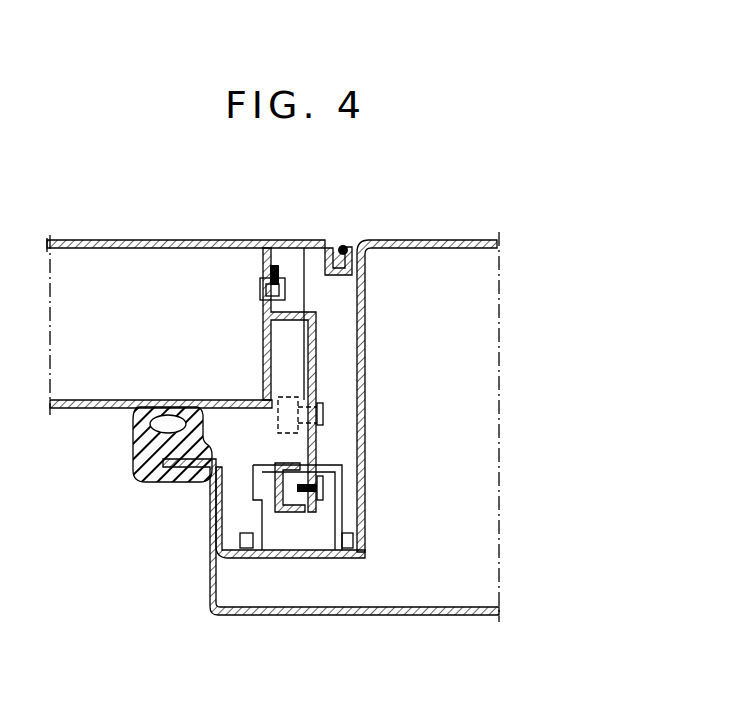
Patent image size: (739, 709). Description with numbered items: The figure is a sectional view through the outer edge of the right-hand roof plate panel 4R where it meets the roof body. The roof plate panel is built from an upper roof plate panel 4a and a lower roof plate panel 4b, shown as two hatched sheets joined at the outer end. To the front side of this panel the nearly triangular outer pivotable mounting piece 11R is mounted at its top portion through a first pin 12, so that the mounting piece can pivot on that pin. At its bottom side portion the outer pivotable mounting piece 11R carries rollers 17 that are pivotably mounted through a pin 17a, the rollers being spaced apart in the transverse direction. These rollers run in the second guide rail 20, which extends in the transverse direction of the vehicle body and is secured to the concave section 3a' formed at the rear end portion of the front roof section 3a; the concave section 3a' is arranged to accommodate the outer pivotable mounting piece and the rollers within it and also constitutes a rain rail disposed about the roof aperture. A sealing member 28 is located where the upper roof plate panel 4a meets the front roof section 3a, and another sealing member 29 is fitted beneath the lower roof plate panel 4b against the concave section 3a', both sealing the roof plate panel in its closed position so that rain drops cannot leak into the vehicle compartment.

The upper roof plate panel 4a is at (78, 240).
The right-hand roof plate panel 4R is at (152, 236).
The lower roof plate panel 4b is at (98, 400).
The sealing member 28 is at (344, 246).
The front roof section 3a is at (331, 390).
The concave section 3a' is at (290, 570).
The outer pivotable mounting piece 11R is at (318, 369).
The first pin 12 is at (287, 290).
The roller 17 is at (268, 394).
The pin 17a is at (323, 415).
The second guide rail 20 is at (287, 513).
The sealing member 29 is at (130, 463).